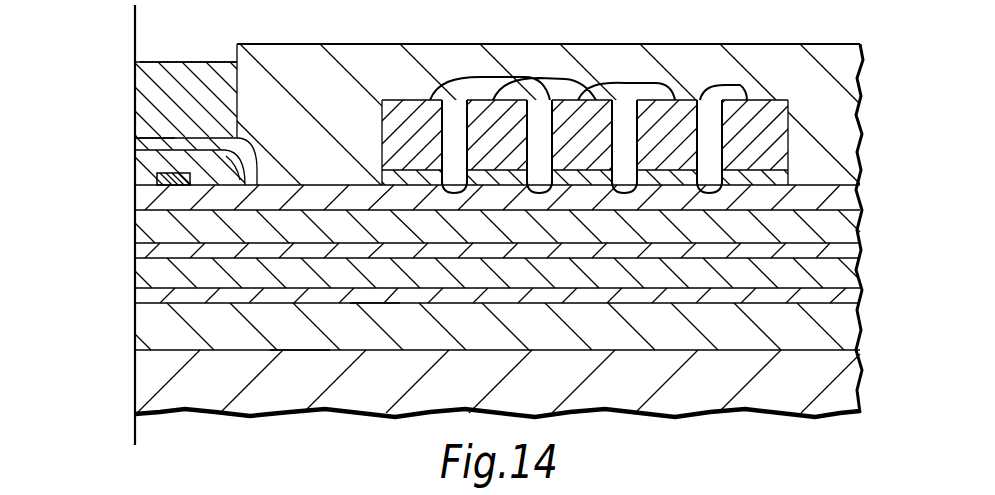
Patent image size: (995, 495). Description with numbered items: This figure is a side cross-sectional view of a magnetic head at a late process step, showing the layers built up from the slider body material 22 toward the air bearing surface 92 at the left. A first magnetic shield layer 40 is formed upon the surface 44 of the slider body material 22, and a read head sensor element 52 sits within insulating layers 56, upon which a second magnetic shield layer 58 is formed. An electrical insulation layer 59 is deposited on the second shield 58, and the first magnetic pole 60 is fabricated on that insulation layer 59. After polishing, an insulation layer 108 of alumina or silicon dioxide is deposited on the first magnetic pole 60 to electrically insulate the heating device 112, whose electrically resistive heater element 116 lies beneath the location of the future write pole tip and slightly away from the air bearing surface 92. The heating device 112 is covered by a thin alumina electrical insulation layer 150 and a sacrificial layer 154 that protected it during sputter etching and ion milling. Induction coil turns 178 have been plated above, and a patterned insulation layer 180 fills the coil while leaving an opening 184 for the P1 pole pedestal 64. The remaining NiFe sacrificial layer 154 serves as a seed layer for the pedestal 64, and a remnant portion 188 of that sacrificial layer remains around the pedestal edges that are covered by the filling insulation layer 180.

The slider body material 22 is at (147, 380).
The first magnetic shield layer (S1) 40 is at (145, 330).
The surface 44 is at (300, 347).
The read head sensor element 52 is at (135, 300).
The insulating layers 56 is at (372, 301).
The second magnetic shield layer (S2) 58 is at (147, 277).
The electrical insulation layer 59 is at (147, 253).
The first magnetic pole (P1) 60 is at (148, 227).
The P1 pole pedestal 64 is at (148, 78).
The air bearing surface (ABS) 92 is at (133, 33).
The insulation layer 108 is at (138, 203).
The heating device 112 is at (116, 122).
The electrically resistive heater element 116 is at (157, 177).
The electrical insulation layer 150 is at (233, 175).
The sacrificial layer 154 is at (205, 140).
The induction coil turns 178 is at (565, 86).
The patterned insulation layer 180 is at (438, 70).
The opening 184 is at (166, 46).
The remnant portion 188 is at (247, 160).